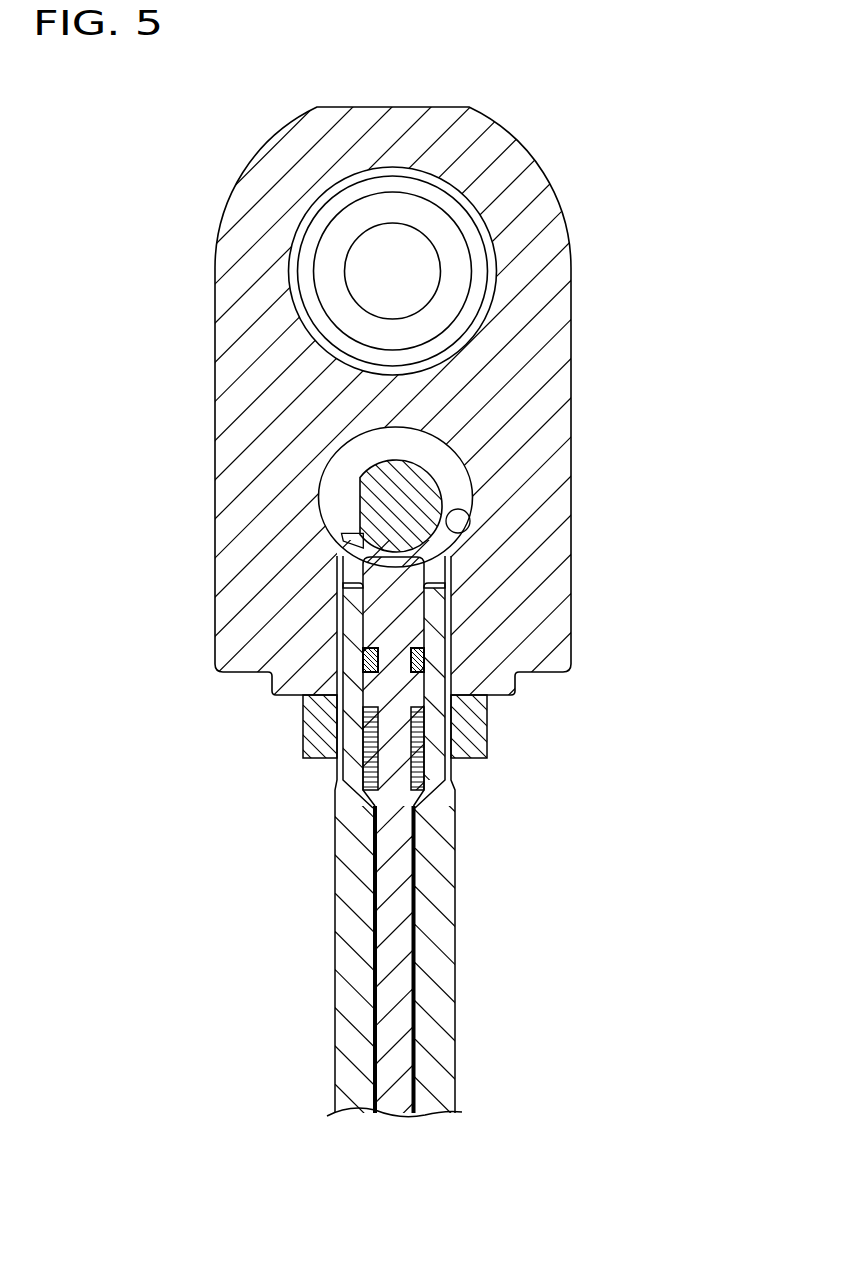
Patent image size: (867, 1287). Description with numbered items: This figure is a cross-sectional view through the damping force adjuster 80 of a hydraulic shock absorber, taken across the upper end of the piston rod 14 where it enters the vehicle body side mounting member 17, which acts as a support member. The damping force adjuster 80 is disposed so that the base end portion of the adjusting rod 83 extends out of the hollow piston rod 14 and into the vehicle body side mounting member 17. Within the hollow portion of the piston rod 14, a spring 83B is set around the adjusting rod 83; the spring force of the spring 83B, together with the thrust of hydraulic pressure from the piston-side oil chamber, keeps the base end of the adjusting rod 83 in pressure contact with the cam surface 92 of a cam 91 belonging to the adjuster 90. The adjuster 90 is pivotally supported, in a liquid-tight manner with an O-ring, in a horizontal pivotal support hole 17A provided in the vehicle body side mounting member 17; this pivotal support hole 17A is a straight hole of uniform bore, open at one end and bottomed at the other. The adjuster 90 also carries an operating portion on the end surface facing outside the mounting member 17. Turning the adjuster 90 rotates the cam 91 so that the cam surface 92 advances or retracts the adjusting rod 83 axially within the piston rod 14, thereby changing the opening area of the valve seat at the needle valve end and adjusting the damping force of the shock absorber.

The piston rod 14 is at (345, 955).
The vehicle body side mounting member 17 is at (215, 373).
The pivotal support hole 17A is at (468, 511).
The damping force adjuster 80 is at (432, 504).
The adjusting rod 83 is at (433, 625).
The spring 83B is at (447, 762).
The adjuster 90 is at (471, 475).
The cam 91 is at (444, 495).
The cam surface 92 is at (415, 553).